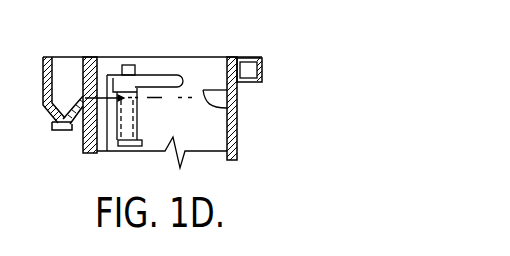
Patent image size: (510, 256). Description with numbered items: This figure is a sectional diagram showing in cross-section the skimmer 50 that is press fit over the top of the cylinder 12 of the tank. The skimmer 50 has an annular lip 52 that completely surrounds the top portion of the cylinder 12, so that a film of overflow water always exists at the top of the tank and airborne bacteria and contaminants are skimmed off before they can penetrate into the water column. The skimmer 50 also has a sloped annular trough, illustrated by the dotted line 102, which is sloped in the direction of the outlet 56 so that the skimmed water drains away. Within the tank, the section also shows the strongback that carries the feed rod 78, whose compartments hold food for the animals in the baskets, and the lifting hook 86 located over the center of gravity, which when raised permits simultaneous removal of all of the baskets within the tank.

The skimmer 50 is at (273, 48).
The annular lip 52 is at (84, 58).
The outlet 56 is at (52, 122).
The feed rod 78 is at (128, 65).
The lifting hook 86 is at (167, 77).
The cylinder 12 is at (236, 98).
The dotted line 102 is at (235, 113).